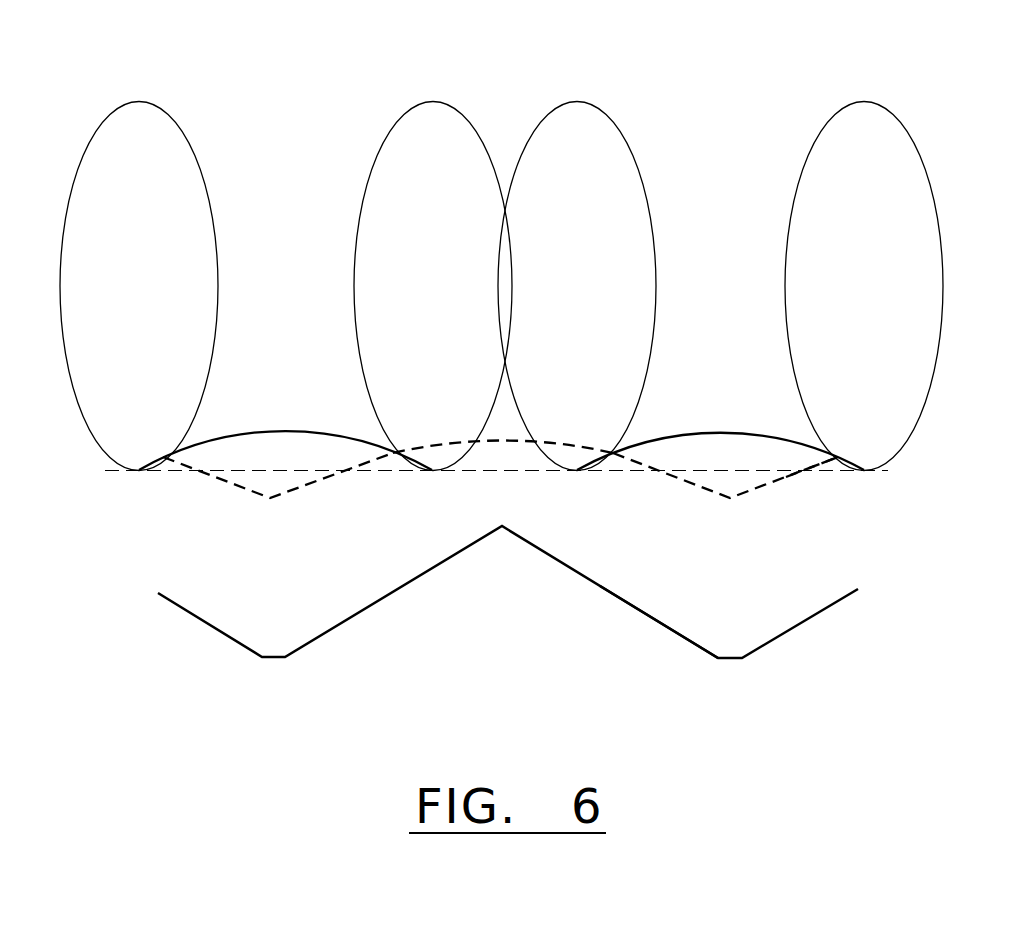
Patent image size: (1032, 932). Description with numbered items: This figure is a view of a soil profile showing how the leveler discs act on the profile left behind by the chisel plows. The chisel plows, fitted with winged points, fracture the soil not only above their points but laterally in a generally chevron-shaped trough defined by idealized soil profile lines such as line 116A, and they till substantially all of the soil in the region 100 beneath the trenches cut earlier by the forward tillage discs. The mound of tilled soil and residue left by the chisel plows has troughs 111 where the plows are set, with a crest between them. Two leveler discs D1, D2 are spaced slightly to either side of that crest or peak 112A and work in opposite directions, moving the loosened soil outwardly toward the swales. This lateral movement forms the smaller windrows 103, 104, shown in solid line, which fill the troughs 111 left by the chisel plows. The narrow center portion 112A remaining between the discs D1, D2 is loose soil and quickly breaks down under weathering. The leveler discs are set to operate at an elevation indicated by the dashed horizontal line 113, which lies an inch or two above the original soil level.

The leveler disc D1 is at (433, 101).
The leveler disc D2 is at (593, 105).
The region of tillage 100 is at (503, 549).
The smaller windrow 103 is at (280, 431).
The smaller windrow 104 is at (710, 431).
The trough 111 is at (268, 502).
The center portion 112A is at (500, 443).
The dashed horizontal line 113 is at (828, 473).
The idealized soil profile line 116A is at (665, 625).